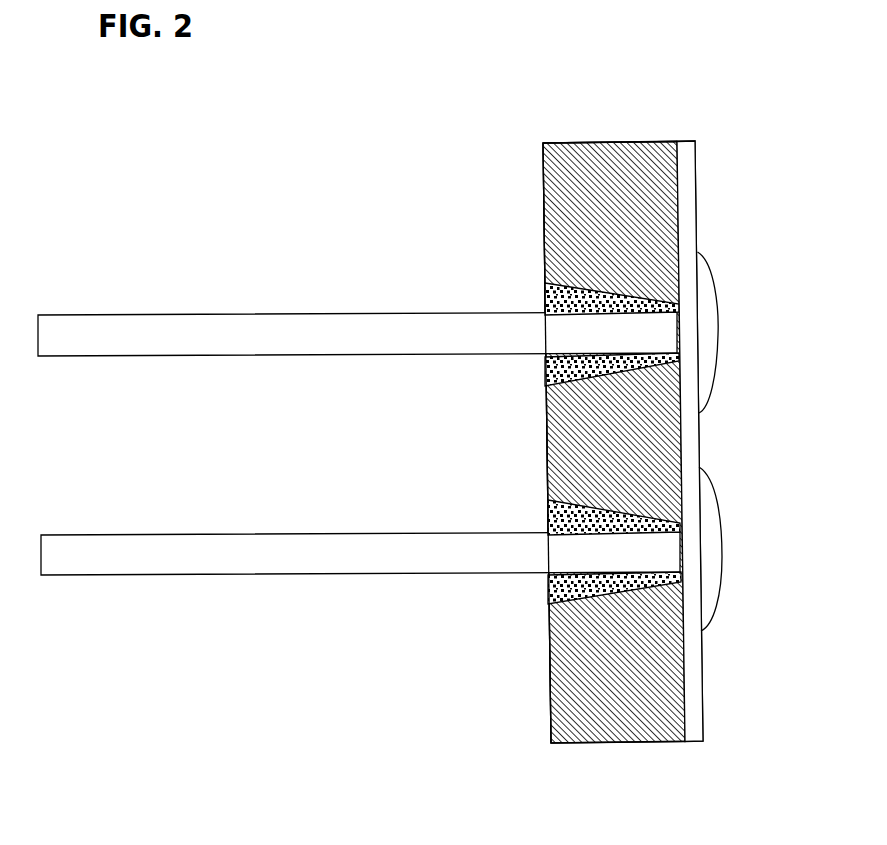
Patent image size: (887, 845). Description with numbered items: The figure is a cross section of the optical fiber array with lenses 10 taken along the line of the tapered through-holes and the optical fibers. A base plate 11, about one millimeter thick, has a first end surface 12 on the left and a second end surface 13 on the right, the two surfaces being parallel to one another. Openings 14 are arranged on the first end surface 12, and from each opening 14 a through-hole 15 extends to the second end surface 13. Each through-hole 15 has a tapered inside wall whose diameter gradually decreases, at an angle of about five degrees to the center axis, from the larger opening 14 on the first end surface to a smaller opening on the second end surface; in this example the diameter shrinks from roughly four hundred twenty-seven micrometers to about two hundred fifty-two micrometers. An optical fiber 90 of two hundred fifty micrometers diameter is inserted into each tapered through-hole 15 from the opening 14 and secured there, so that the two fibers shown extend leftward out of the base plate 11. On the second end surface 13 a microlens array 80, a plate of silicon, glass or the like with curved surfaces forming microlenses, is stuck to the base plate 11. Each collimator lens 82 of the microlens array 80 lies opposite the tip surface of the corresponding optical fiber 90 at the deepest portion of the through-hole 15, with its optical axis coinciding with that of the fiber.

The optical fiber array with lenses 10 is at (483, 117).
The base plate 11 is at (625, 164).
The first end surface 12 is at (545, 176).
The second end surface 13 is at (677, 165).
The opening 14 is at (548, 509).
The through-hole 15 is at (550, 593).
The microlens array 80 is at (688, 190).
The collimator lens 82 is at (708, 288).
The optical fiber 90 is at (91, 557).